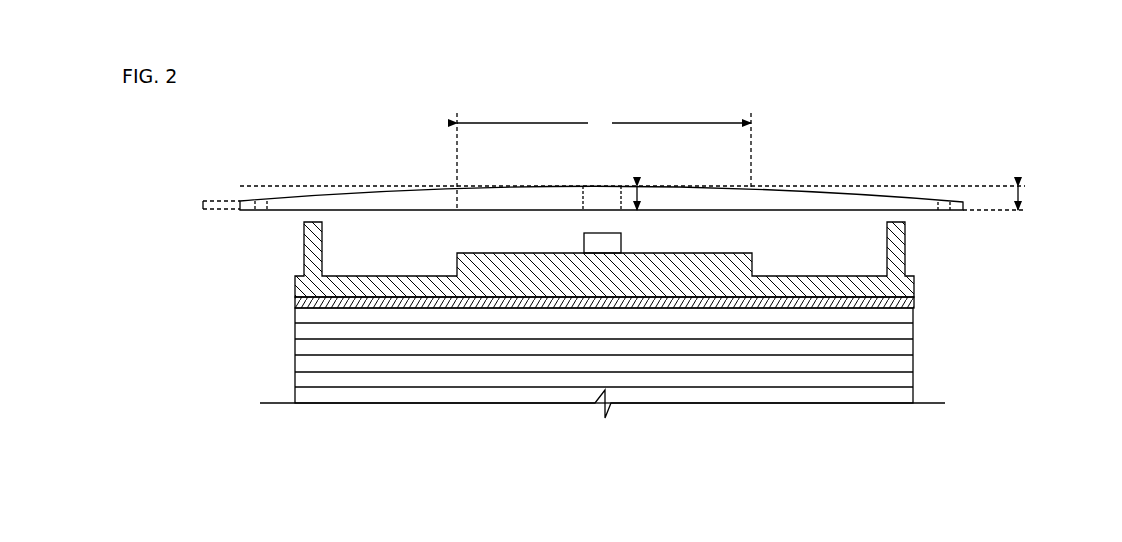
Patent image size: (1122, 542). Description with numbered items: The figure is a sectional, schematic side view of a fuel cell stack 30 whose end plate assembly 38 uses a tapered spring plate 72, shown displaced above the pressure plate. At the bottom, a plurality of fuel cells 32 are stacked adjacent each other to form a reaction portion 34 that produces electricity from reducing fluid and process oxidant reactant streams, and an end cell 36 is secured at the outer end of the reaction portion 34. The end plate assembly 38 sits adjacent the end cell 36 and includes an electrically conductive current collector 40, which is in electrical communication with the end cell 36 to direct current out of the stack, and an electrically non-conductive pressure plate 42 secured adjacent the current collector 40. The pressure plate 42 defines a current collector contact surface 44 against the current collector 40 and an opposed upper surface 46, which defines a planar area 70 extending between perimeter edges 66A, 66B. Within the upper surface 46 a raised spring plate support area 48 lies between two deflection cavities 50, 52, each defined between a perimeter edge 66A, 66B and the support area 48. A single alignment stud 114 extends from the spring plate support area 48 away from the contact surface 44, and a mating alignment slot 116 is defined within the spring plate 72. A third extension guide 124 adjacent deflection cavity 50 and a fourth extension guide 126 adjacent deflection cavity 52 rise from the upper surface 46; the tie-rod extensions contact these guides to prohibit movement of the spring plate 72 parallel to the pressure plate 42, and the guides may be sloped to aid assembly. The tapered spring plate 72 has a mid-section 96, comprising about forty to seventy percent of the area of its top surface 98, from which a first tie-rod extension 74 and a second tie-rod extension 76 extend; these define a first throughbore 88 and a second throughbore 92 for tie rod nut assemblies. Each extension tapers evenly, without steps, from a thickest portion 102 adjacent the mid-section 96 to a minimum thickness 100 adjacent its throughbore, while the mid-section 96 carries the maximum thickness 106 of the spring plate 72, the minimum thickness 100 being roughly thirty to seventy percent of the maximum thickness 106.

The fuel cell stack 30 is at (1025, 118).
The fuel cells 32 is at (910, 334).
The reaction portion 34 is at (278, 386).
The end cell 36 is at (910, 316).
The end plate assembly 38 is at (250, 258).
The current collector 40 is at (296, 299).
The pressure plate 42 is at (923, 251).
The current collector contact surface 44 is at (808, 290).
The upper surface 46 is at (845, 275).
The spring plate support area 48 is at (530, 253).
The deflection cavity 50 is at (378, 270).
The deflection cavity 52 is at (772, 270).
The perimeter edge 66A is at (303, 256).
The perimeter edge 66B is at (914, 270).
The planar area 70 is at (388, 232).
The tapered spring plate 72 is at (664, 176).
The first tie-rod extension 74 is at (240, 200).
The second tie-rod extension 76 is at (965, 202).
The first throughbore 88 is at (258, 196).
The second throughbore 92 is at (943, 200).
The mid-section 96 is at (604, 160).
The top surface 98 is at (518, 186).
The minimum thickness 100 is at (203, 205).
The thickest portion 102 is at (457, 207).
The maximum thickness 106 is at (629, 188).
The alignment stud 114 is at (624, 240).
The alignment slot 116 is at (603, 188).
The third extension guide 124 is at (303, 222).
The fourth extension guide 126 is at (905, 222).